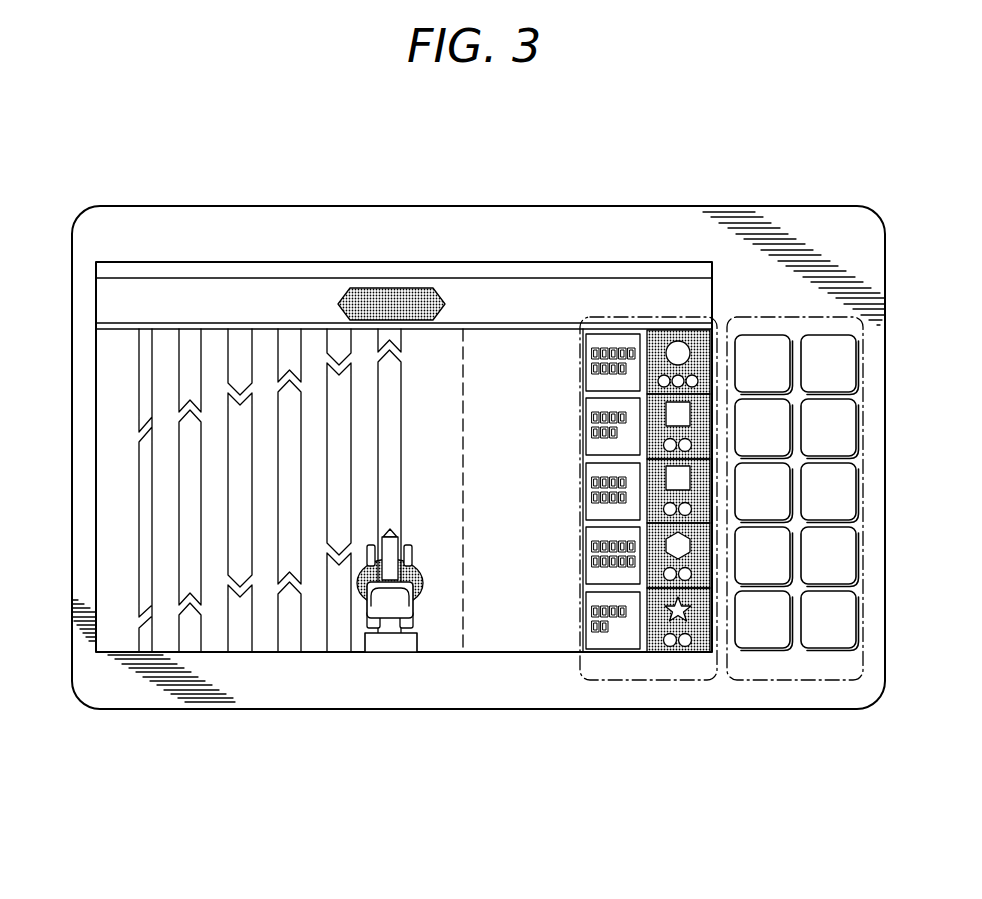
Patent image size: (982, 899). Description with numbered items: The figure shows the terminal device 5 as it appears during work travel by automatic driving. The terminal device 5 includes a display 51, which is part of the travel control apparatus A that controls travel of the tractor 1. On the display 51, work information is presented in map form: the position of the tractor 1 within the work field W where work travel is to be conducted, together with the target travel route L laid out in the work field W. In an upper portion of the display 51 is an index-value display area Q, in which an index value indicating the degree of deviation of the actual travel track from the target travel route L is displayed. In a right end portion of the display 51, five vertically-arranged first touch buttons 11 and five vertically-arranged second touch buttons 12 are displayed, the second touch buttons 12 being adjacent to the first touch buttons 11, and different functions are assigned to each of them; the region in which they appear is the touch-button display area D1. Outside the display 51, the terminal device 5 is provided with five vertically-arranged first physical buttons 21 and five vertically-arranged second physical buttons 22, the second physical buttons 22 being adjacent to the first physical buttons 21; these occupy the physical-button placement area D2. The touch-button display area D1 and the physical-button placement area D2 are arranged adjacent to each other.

The terminal device 5 is at (113, 183).
The display 51 is at (242, 262).
The travel control apparatus A is at (404, 398).
The index-value display area Q is at (390, 284).
The target travel route L is at (189, 497).
The work field W is at (463, 410).
The tractor 1 is at (405, 598).
The touch-button display area D1 is at (648, 315).
The first touch buttons 11 is at (610, 662).
The second touch buttons 12 is at (678, 662).
The physical-button placement area D2 is at (796, 315).
The first physical buttons 21 is at (762, 658).
The second physical buttons 22 is at (828, 658).